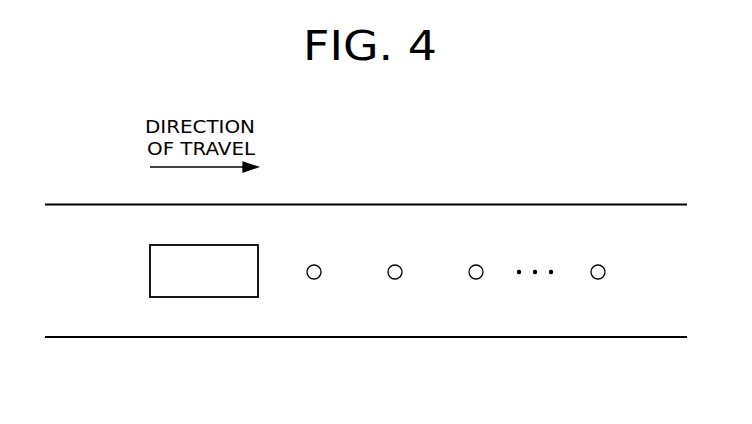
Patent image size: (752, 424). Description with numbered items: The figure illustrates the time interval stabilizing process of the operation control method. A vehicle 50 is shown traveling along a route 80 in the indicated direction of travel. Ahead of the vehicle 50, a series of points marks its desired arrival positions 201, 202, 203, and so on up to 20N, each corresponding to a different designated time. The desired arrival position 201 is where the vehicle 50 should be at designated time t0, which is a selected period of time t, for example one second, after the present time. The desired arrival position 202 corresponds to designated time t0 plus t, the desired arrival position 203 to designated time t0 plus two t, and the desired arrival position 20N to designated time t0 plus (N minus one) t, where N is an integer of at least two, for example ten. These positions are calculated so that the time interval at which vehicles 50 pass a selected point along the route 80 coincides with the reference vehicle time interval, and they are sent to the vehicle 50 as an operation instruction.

The route 80 is at (586, 204).
The vehicle 50 is at (203, 283).
The desired arrival position 201 is at (314, 279).
The desired arrival position 202 is at (395, 279).
The desired arrival position 203 is at (476, 279).
The desired arrival position 20N is at (598, 279).